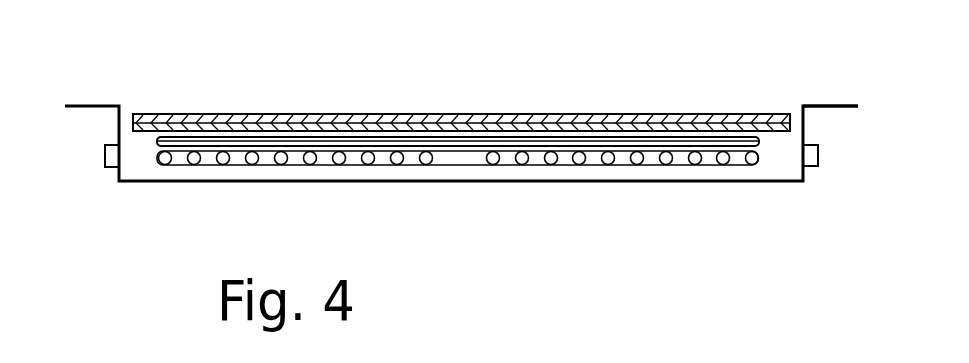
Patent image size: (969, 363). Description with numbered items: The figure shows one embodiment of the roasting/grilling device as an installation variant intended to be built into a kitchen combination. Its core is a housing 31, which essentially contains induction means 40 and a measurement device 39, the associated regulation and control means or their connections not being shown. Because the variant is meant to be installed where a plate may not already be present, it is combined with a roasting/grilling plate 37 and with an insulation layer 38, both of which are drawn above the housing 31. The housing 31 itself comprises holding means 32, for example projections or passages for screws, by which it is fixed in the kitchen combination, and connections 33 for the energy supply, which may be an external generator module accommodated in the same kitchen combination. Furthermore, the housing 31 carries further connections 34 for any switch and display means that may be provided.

The housing 31 is at (627, 181).
The holding means 32 is at (830, 106).
The connections for the energy supply 33 is at (105, 152).
The further connections for switch and display means 34 is at (130, 192).
The roasting/grilling plate 37 is at (212, 113).
The insulation layer 38 is at (300, 122).
The measurement device 39 is at (760, 144).
The induction means 40 is at (670, 164).